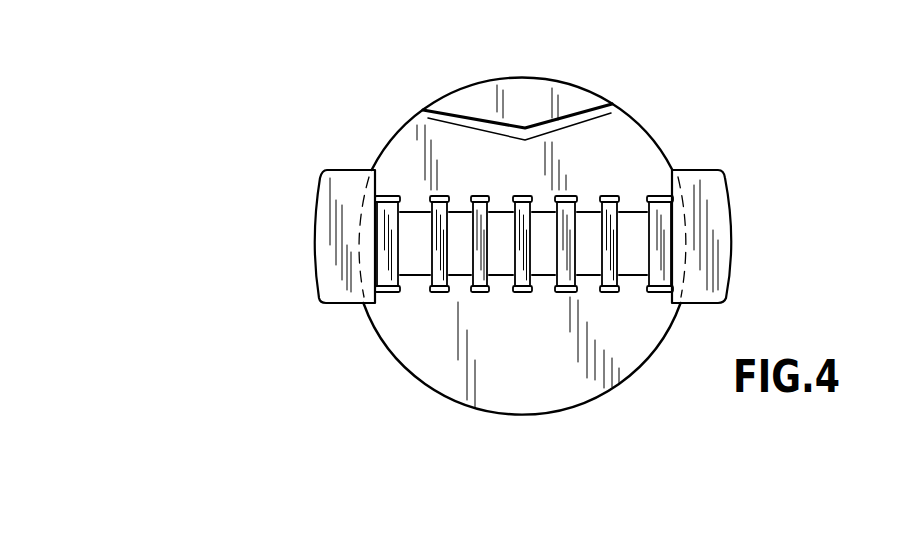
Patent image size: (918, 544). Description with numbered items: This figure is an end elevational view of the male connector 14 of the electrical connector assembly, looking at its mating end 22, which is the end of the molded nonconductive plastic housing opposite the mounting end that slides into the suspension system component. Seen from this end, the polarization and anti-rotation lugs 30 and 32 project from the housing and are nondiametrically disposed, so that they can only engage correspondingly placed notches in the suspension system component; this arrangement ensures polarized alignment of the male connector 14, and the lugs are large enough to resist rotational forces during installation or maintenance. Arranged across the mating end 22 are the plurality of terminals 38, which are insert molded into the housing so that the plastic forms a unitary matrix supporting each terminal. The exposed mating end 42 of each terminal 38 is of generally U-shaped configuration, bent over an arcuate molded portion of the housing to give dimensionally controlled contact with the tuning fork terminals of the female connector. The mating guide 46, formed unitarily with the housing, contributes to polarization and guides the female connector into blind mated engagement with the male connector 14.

The male connector 14 is at (525, 228).
The mating end 22 is at (390, 272).
The polarization and anti-rotation lug 30 is at (732, 225).
The polarization and anti-rotation lug 32 is at (314, 247).
The terminal 38 is at (460, 194).
The mating end 42 is at (462, 272).
The mating guide 46 is at (576, 101).